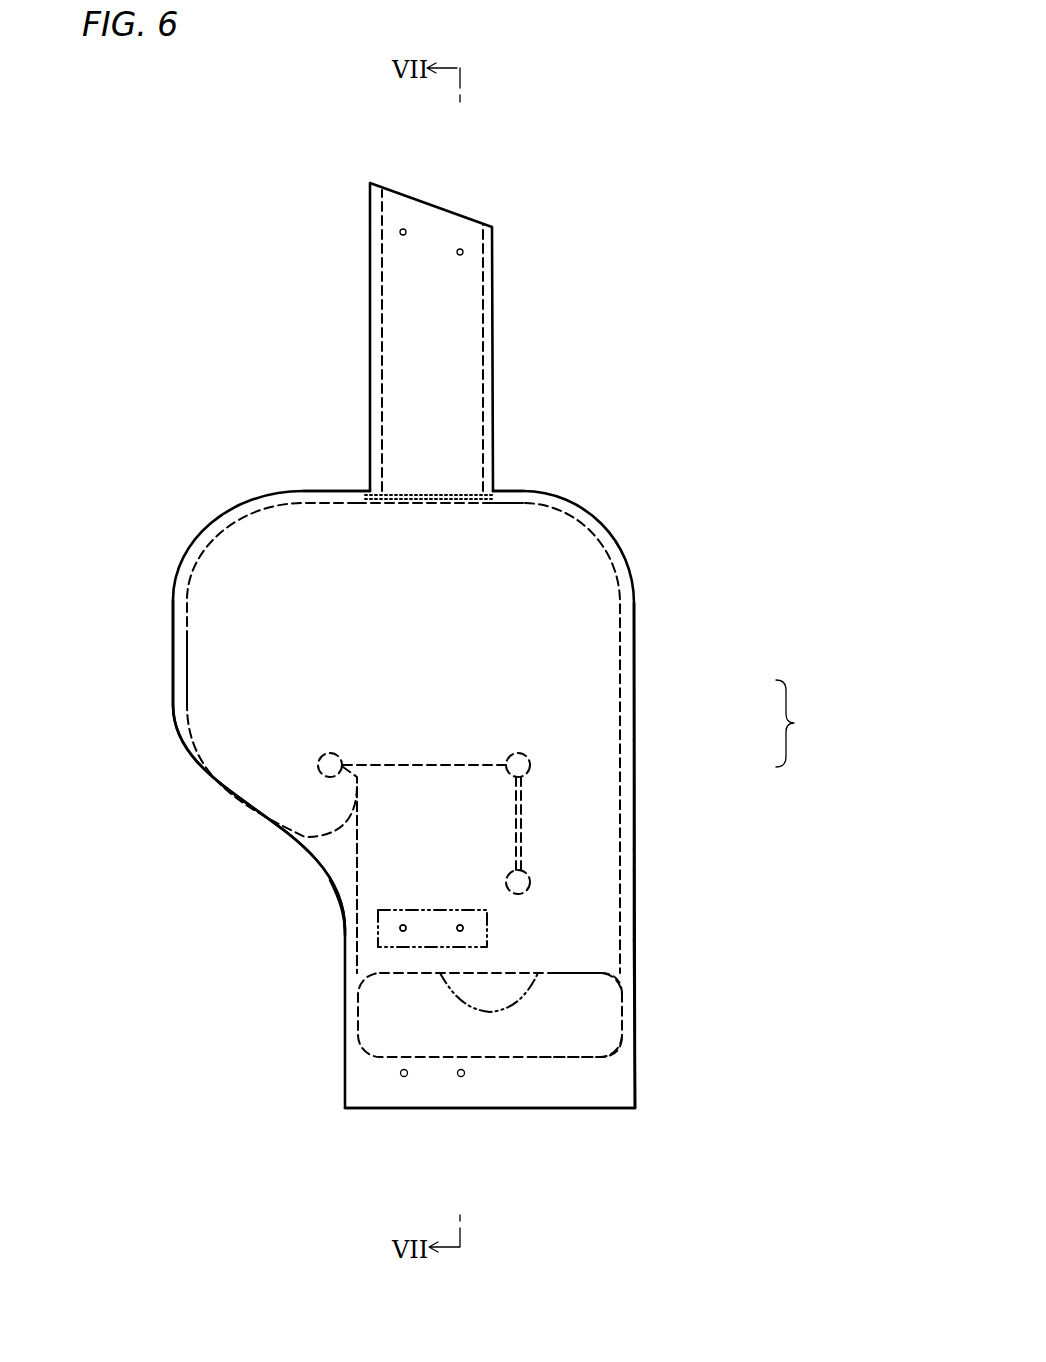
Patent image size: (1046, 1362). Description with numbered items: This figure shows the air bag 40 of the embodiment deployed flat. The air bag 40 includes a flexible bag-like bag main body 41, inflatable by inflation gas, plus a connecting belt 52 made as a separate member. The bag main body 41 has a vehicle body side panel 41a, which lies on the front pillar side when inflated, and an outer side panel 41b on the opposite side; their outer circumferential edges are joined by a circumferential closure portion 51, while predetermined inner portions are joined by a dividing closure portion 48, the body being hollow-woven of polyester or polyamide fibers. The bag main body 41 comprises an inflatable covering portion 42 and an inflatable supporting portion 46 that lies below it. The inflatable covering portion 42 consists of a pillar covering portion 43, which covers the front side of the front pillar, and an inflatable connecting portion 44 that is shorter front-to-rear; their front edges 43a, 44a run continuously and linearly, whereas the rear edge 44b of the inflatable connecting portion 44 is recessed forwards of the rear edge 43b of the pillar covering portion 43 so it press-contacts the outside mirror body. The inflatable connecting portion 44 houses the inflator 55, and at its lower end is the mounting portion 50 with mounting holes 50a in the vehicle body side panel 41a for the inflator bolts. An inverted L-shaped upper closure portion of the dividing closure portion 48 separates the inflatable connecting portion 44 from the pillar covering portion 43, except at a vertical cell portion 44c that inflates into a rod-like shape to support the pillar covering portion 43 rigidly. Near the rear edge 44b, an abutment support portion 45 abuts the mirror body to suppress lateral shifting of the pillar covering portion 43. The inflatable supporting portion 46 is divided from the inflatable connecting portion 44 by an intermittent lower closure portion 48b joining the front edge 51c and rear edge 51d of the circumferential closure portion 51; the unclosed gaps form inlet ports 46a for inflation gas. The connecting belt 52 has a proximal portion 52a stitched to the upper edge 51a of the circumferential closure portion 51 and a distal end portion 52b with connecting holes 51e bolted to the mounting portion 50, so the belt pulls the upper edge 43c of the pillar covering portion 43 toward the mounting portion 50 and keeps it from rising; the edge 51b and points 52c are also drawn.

The air bag 40 is at (182, 424).
The bag main body 41 is at (312, 530).
The vehicle body side panel 41a is at (225, 697).
The outer side panel 41b is at (222, 653).
The inflatable covering portion 42 is at (806, 723).
The pillar covering portion 43 is at (661, 687).
The front edge of pillar covering portion 43a is at (610, 630).
The rear edge of pillar covering portion 43b is at (195, 630).
The upper edge of pillar covering portion 43c is at (520, 493).
The inflatable connecting portion 44 is at (665, 853).
The front edge of inflatable connecting portion 44a is at (612, 887).
The rear edge of inflatable connecting portion 44b is at (363, 885).
The vertical cell portion 44c is at (573, 820).
The abutment support portion 45 is at (212, 822).
The inflatable supporting portion 46 is at (573, 1033).
The inlet ports 46a is at (489, 1009).
The dividing closure portion 48 is at (435, 741).
The lower closure portion 48b is at (593, 986).
The mounting portion 50 is at (380, 923).
The mounting holes 50a is at (459, 925).
The circumferential closure portion 51 is at (208, 542).
The upper edge of circumferential closure portion 51a is at (508, 512).
The lining bottom edge 51b is at (488, 1097).
The front edge of circumferential closure portion 51c is at (640, 937).
The rear edge of circumferential closure portion 51d is at (345, 1000).
The connecting holes 51e is at (406, 1077).
The connecting belt 52 is at (395, 372).
The proximal portion 52a is at (458, 490).
The distal end portion 52b is at (478, 236).
The strap fixing points 52c is at (459, 249).
The inflator 55 is at (383, 940).